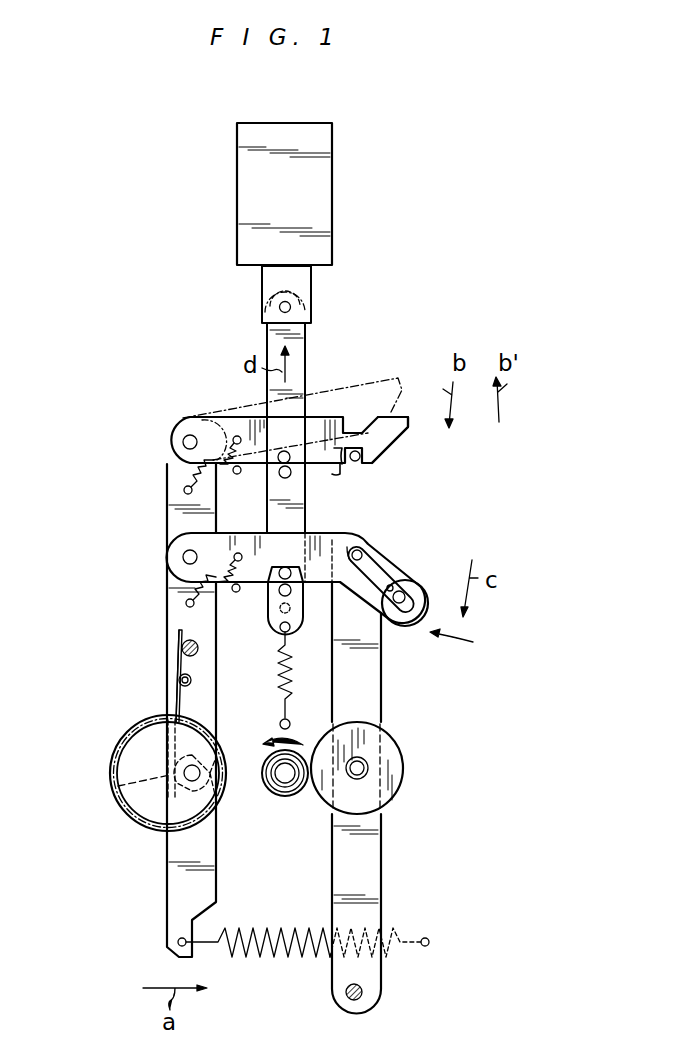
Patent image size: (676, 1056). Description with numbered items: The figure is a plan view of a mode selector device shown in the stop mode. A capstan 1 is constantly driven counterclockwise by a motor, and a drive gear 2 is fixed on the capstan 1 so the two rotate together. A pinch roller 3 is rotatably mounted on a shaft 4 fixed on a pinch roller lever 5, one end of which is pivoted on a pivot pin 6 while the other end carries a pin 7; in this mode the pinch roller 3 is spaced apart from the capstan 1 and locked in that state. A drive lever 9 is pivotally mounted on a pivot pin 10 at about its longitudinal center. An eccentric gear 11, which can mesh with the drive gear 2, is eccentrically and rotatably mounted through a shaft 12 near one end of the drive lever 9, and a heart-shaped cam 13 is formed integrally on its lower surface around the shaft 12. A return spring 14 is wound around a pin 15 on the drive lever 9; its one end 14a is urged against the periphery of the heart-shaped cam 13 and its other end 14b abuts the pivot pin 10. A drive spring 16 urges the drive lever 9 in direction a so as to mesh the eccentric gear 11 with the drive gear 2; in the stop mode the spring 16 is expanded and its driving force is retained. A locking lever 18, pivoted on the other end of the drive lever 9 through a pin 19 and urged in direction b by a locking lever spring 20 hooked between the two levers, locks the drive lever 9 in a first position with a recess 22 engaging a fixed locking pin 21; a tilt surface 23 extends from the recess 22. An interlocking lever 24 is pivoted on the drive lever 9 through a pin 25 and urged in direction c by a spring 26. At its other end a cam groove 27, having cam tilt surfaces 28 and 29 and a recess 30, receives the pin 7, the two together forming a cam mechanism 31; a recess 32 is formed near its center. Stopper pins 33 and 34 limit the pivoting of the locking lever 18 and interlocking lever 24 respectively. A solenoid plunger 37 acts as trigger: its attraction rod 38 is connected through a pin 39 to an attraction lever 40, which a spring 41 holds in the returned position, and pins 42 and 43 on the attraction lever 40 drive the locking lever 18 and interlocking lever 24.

The capstan 1 is at (290, 785).
The drive gear 2 is at (272, 792).
The pinch roller 3 is at (368, 798).
The shaft 4 is at (365, 763).
The pinch roller lever 5 is at (372, 890).
The pivot pin 6 is at (362, 992).
The pin 7 is at (362, 556).
The drive lever 9 is at (167, 890).
The pivot pin 10 is at (198, 652).
The eccentric gear 11 is at (160, 828).
The shaft 12 is at (200, 770).
The heart-shaped cam 13 is at (213, 797).
The return spring 14 is at (178, 688).
The one end of the return spring 14a is at (120, 785).
The other end of the return spring 14b is at (180, 663).
The pin 15 is at (191, 680).
The drive spring 16 is at (292, 952).
The locking lever 18 is at (250, 430).
The pin 19 is at (183, 442).
The locking lever spring 20 is at (185, 487).
The fixed locking pin 21 is at (357, 462).
The recess 22 is at (338, 470).
The tilt surface 23 is at (392, 448).
The interlocking lever 24 is at (316, 533).
The pin 25 is at (183, 557).
The spring 26 is at (187, 600).
The cam groove 27 is at (405, 597).
The cam tilt surface 28 is at (390, 614).
The cam tilt surface 29 is at (394, 586).
The recess 30 is at (358, 543).
The cam mechanism 31 is at (468, 642).
The recess 32 is at (268, 600).
The stopper pin 33 is at (237, 474).
The stopper pin 34 is at (236, 592).
The plunger 37 is at (322, 190).
The attraction rod 38 is at (310, 290).
The pin 39 is at (291, 307).
The attraction lever 40 is at (305, 342).
The spring 41 is at (282, 699).
The pin 42 is at (290, 451).
The pin 43 is at (292, 592).